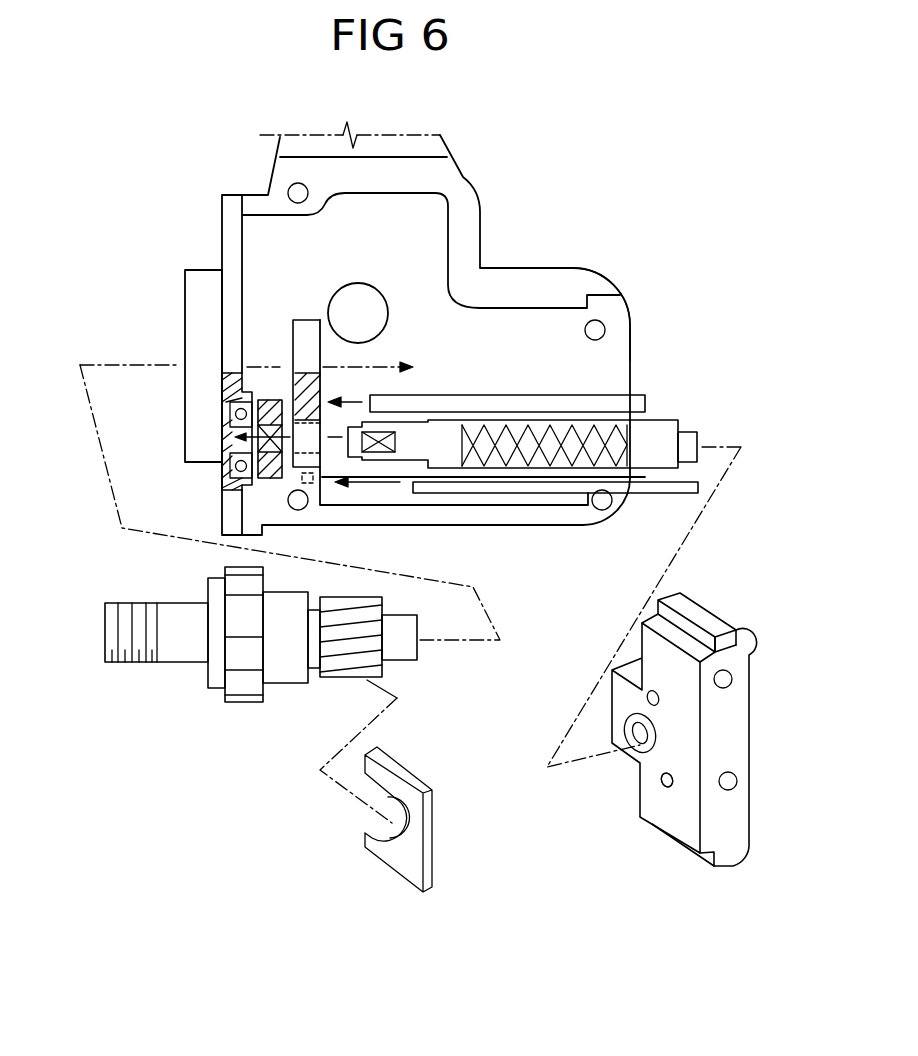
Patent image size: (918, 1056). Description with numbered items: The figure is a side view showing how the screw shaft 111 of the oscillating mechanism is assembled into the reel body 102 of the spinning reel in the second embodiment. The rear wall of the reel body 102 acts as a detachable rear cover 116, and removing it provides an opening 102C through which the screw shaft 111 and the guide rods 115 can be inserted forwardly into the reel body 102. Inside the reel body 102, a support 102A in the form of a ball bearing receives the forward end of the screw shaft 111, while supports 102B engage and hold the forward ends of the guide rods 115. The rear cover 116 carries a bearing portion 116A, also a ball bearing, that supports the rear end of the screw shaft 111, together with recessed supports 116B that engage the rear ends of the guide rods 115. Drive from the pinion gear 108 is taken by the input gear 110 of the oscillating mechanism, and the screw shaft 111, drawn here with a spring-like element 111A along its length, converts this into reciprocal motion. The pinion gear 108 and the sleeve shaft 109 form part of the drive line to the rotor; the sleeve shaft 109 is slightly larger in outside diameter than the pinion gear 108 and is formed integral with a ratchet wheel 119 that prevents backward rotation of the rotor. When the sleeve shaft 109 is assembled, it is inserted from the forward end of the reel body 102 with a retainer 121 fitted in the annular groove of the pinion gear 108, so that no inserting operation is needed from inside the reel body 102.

The reel body 102 is at (452, 180).
The support 102A is at (221, 415).
The supports 102B is at (305, 358).
The opening 102C is at (615, 349).
The pinion gear 108 is at (325, 642).
The sleeve shaft 109 is at (173, 650).
The input gear 110 is at (270, 400).
The screw shaft 111 is at (667, 435).
The coil spring 111A is at (558, 423).
The guide rods 115 is at (457, 402).
The rear cover 116 is at (733, 794).
The bearing portion 116A is at (640, 747).
The recessed supports 116B is at (665, 788).
The ratchet wheel 119 is at (242, 702).
The retainer 121 is at (392, 857).